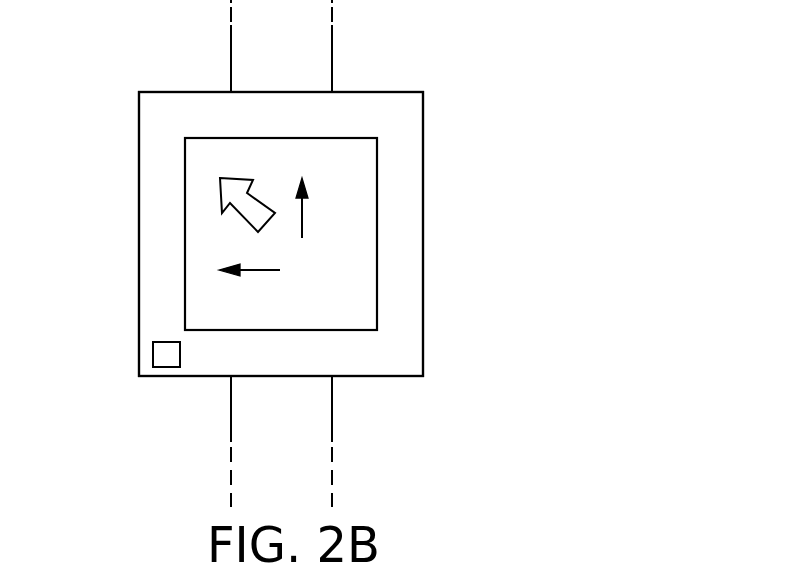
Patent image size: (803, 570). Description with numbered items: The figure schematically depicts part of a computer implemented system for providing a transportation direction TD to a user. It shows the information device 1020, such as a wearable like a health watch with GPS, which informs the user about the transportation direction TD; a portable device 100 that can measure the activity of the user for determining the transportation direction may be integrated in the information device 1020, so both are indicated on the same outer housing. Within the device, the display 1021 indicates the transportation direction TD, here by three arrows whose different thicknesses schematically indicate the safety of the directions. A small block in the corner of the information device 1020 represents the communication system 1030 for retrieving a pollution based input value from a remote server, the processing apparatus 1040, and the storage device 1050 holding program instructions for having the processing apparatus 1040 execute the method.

The information device 1020 is at (467, 272).
The portable device 100 is at (474, 272).
The display 1021 is at (362, 219).
The communication system 1030 is at (165, 355).
The processing apparatus 1040 is at (111, 414).
The storage device 1050 is at (111, 428).
The transportation direction TD is at (300, 213).